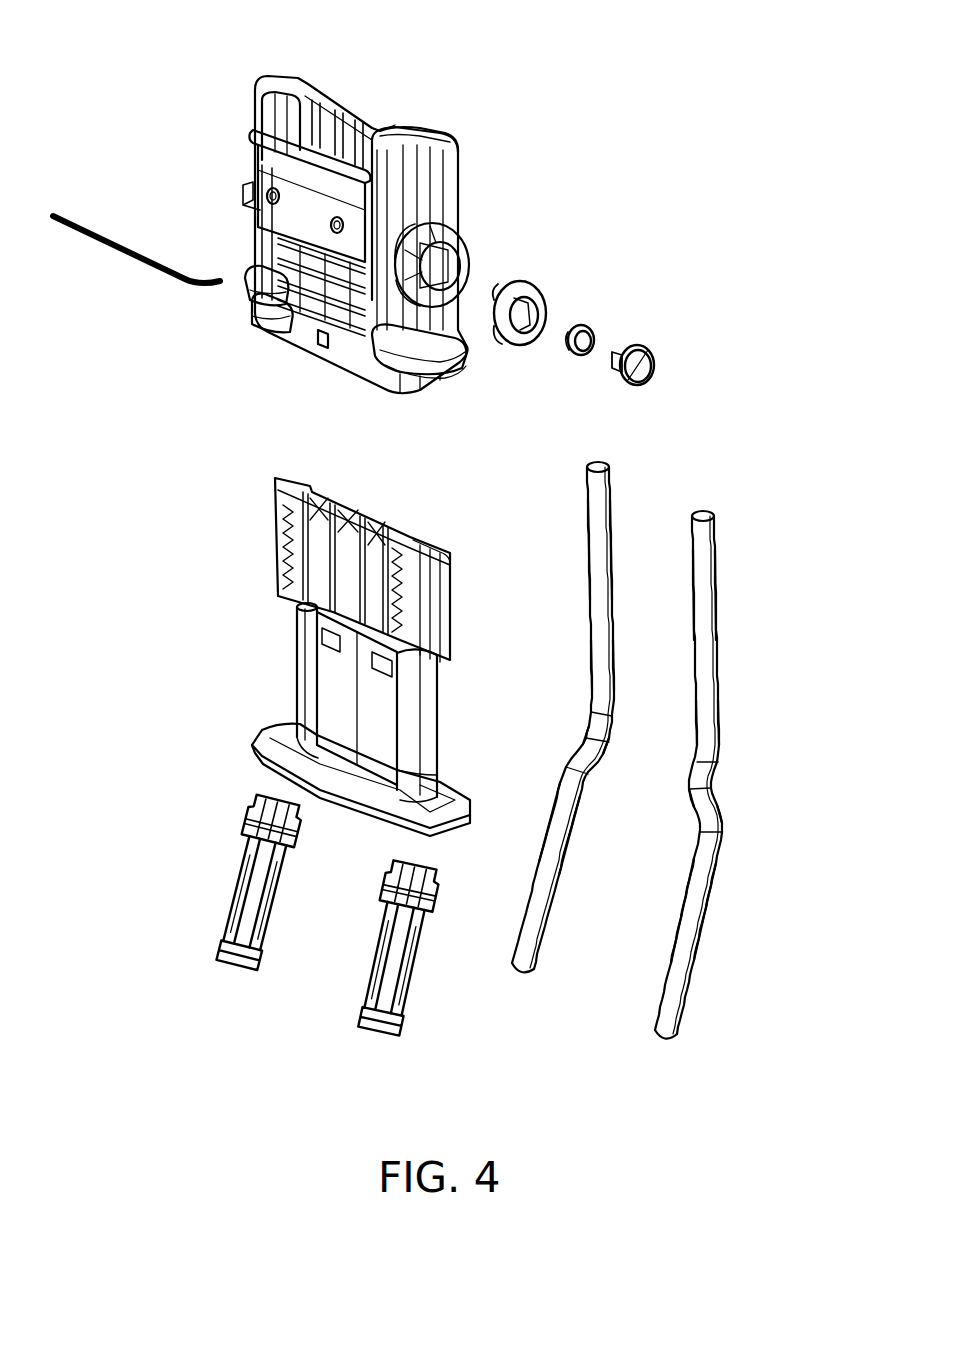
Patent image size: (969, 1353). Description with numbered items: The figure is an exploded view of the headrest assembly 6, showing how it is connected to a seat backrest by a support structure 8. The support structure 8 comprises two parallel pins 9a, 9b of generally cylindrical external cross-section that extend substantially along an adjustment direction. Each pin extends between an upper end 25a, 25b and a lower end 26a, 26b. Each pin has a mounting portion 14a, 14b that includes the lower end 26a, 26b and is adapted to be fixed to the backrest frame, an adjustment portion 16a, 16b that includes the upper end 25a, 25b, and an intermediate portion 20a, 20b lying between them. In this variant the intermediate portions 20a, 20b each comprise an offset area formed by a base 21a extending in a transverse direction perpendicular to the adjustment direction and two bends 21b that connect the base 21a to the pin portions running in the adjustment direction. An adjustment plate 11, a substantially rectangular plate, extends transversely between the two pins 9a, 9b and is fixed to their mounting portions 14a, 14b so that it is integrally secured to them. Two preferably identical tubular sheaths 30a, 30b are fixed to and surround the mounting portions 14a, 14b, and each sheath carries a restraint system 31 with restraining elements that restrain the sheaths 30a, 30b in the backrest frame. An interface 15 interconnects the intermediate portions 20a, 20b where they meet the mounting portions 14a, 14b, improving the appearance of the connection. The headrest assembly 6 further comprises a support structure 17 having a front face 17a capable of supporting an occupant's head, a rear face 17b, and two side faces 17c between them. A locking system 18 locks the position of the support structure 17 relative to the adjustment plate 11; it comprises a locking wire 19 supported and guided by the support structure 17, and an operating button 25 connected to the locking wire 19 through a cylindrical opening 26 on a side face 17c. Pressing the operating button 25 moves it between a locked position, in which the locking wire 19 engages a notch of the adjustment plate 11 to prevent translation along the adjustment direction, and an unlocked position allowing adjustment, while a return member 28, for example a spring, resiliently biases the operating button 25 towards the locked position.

The headrest assembly 6 is at (567, 135).
The support structure 17 is at (226, 73).
The front face 17a is at (250, 165).
The rear face 17b is at (402, 120).
The side faces 17c is at (452, 184).
The cylindrical opening 26 is at (467, 258).
The locking wire 19 is at (130, 253).
The locking system 18 is at (578, 292).
The return member 28 is at (573, 352).
The operating button 25 is at (642, 368).
The support structure 8 is at (212, 762).
The adjustment plate 11 is at (360, 520).
The interface 15 is at (338, 682).
The sheath 30a is at (228, 920).
The sheath 30b is at (360, 985).
The restraint system 31 is at (452, 886).
The pin 9a is at (552, 600).
The pin 9b is at (765, 643).
The upper end 25a is at (620, 458).
The upper end 25b is at (723, 506).
The adjustment portion 16a is at (596, 553).
The adjustment portion 16b is at (707, 601).
The intermediate portion 20a is at (598, 688).
The intermediate portion 20b is at (722, 742).
The base 21a is at (575, 740).
The bends 21b is at (600, 750).
The mounting portion 14a is at (550, 858).
The mounting portion 14b is at (680, 966).
The lower end 26a is at (519, 988).
The lower end 26b is at (659, 1048).